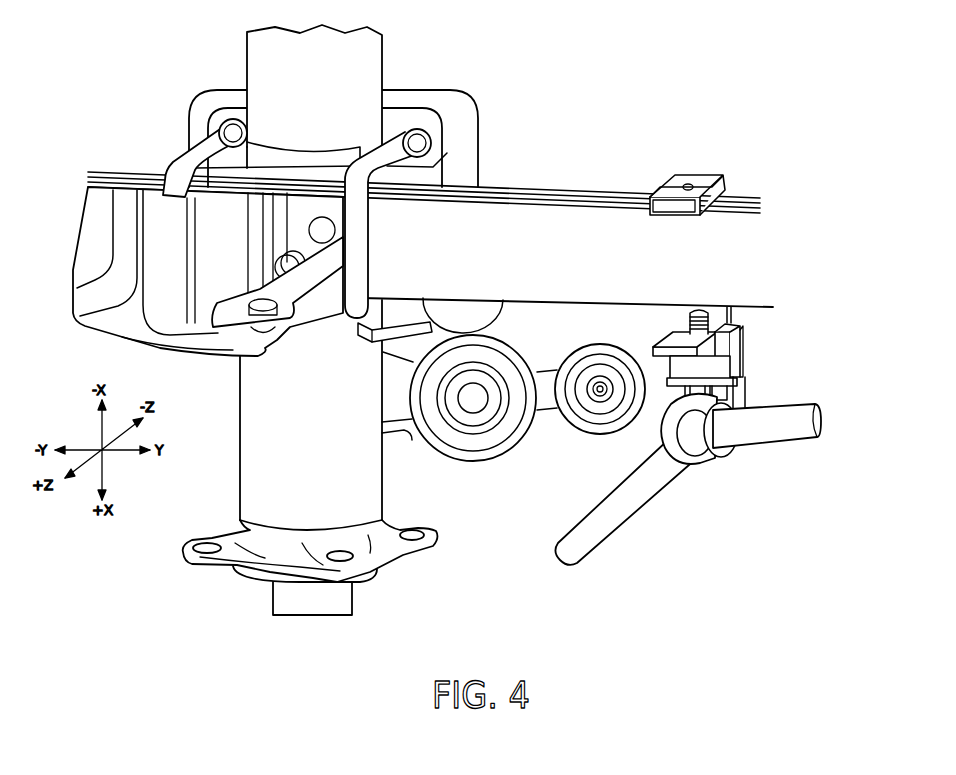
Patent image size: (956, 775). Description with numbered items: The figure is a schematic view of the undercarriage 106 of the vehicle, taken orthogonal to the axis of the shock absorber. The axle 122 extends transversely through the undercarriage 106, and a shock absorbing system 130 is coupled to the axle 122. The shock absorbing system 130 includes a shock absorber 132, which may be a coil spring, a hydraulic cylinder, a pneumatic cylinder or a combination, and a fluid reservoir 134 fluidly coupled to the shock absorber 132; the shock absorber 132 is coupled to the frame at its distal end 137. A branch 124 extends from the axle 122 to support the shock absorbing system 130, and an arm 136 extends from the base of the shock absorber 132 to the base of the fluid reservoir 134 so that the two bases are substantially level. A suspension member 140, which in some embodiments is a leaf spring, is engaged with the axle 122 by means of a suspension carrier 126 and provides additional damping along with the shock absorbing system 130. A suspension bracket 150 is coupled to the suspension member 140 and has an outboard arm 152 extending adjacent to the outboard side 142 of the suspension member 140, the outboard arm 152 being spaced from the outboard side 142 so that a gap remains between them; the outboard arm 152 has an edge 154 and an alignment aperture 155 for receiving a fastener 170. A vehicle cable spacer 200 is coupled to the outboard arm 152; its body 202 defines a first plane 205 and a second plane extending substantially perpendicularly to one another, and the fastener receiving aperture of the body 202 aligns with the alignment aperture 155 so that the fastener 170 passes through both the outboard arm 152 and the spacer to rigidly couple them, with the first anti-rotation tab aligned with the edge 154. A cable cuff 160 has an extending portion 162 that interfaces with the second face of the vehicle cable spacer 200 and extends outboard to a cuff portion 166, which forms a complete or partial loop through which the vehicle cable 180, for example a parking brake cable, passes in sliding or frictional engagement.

The undercarriage 106 is at (118, 102).
The axle 122 is at (240, 445).
The branch 124 is at (402, 432).
The suspension carrier 126 is at (461, 97).
The shock absorbing system 130 is at (540, 550).
The shock absorber 132 is at (473, 466).
The fluid reservoir 134 is at (570, 438).
The arm 136 is at (544, 370).
The distal end 137 is at (486, 418).
The suspension member 140 is at (597, 186).
The outboard side 142 is at (514, 300).
The suspension bracket 150 is at (672, 333).
The outboard arm 152 is at (657, 363).
The edge 154 is at (713, 328).
The alignment aperture 155 is at (677, 327).
The cable cuff 160 is at (750, 378).
The extending portion 162 is at (745, 382).
The cuff portion 166 is at (722, 462).
The fastener 170 is at (668, 420).
The vehicle cable 180 is at (614, 537).
The vehicle cable spacer 200 is at (767, 338).
The body 202 is at (702, 376).
The first plane 205 is at (740, 332).